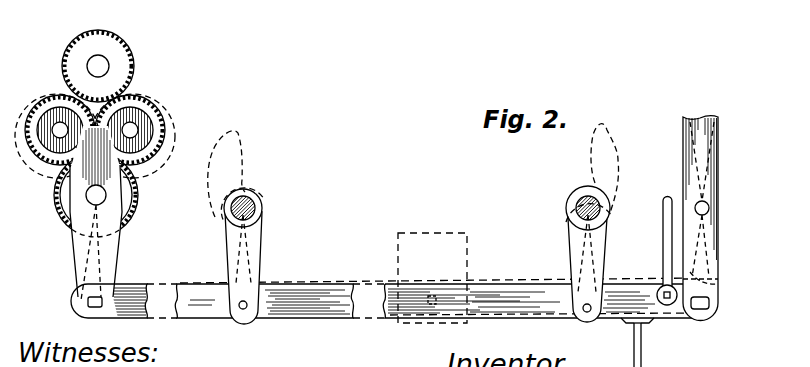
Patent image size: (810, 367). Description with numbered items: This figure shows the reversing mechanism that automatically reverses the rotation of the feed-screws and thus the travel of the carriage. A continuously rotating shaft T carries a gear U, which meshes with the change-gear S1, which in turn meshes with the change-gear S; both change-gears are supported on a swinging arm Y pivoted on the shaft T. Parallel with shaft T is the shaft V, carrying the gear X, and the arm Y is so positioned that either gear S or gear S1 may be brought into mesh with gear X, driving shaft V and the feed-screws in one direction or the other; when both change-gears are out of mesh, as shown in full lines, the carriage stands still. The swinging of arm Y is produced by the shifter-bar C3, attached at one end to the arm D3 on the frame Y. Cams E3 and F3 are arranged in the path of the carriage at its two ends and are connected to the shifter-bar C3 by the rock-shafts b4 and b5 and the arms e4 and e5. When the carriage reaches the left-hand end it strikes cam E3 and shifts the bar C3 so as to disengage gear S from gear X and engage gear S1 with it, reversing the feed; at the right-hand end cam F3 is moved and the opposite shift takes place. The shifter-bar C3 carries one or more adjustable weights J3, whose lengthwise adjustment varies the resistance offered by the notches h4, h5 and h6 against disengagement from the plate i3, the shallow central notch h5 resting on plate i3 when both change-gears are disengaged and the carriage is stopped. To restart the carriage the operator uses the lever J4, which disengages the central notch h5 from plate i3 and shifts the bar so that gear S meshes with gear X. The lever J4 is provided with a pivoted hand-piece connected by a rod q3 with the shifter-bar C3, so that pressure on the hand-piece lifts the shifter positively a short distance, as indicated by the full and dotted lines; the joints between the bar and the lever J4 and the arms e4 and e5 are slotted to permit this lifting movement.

The gear X is at (72, 43).
The shaft V is at (100, 65).
The change-gear S is at (36, 166).
The change-gear S1 is at (158, 114).
The swinging arm Y is at (157, 160).
The shaft T is at (107, 195).
The gear U is at (67, 198).
The arm D3 is at (80, 253).
The cam E3 is at (245, 156).
The rock-shaft b4 is at (256, 207).
The arm e4 is at (253, 256).
The shifter-bar C3 is at (405, 285).
The adjustable weight J3 is at (432, 262).
The cam F3 is at (607, 126).
The rock-shaft b5 is at (576, 208).
The arm e5 is at (600, 254).
The rod q3 is at (662, 238).
The lever J4 is at (710, 133).
The notch h6 is at (621, 322).
The shallow notch h5 is at (631, 324).
The notch h4 is at (651, 321).
The plate i3 is at (648, 345).